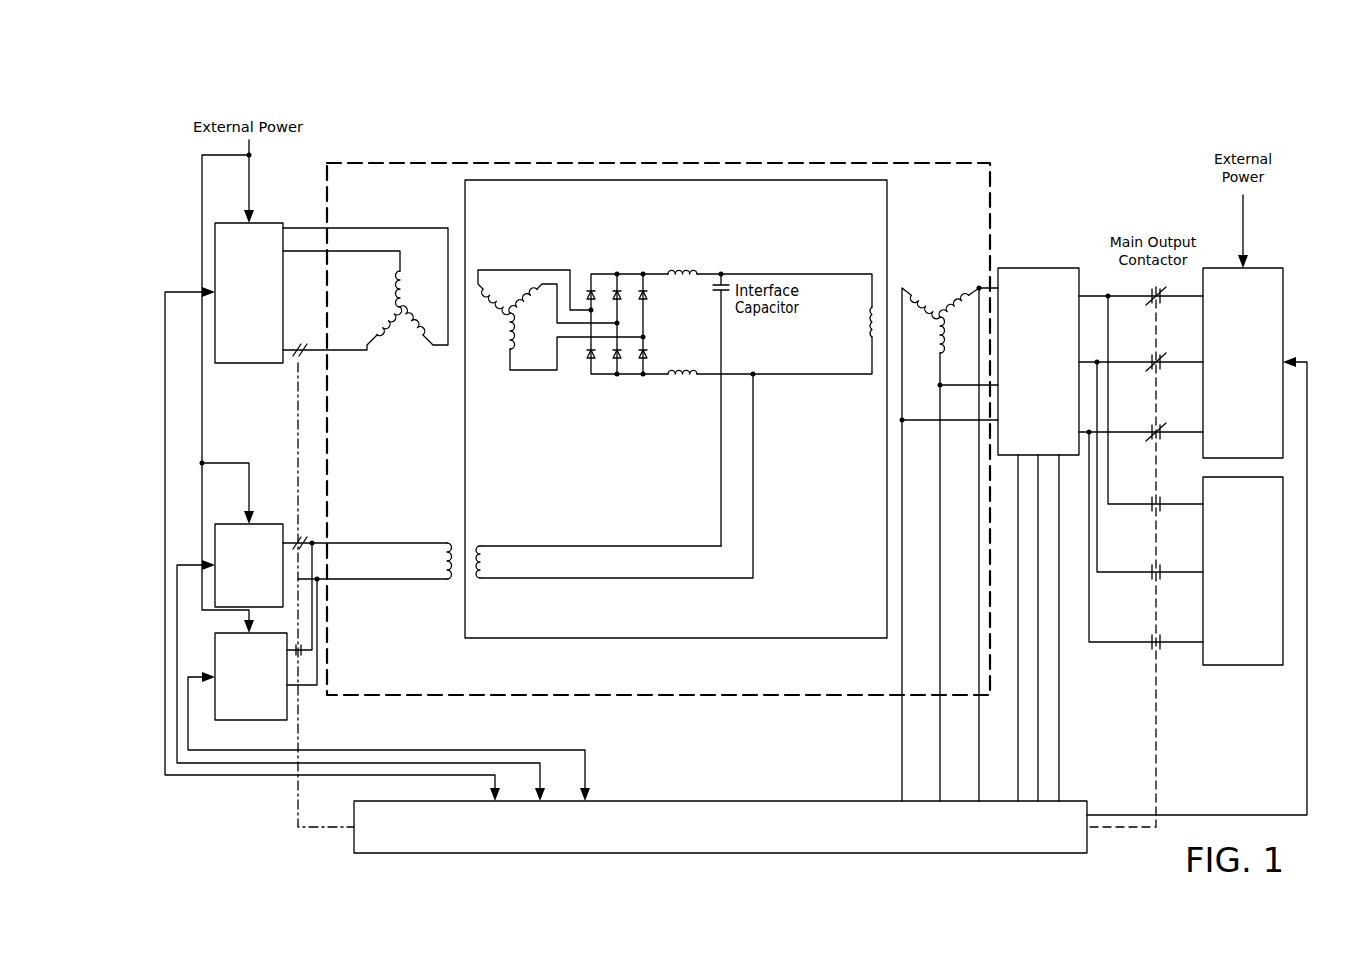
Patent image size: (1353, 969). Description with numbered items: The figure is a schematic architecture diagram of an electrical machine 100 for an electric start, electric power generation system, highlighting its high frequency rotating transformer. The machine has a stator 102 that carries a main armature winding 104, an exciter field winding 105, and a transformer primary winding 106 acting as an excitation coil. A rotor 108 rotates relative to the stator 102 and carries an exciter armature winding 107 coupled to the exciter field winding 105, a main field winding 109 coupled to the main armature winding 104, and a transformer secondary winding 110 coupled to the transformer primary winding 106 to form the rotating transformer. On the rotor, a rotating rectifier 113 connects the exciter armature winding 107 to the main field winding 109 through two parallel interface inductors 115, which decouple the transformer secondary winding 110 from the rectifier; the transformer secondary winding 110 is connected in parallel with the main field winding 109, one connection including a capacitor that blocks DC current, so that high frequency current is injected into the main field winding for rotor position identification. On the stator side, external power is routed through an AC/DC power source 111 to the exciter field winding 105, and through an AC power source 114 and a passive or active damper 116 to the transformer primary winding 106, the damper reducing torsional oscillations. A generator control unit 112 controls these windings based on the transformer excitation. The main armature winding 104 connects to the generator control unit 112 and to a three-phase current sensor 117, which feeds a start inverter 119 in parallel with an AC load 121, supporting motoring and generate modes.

The electrical machine 100 is at (1136, 132).
The stator 102 is at (950, 163).
The main armature winding 104 is at (975, 278).
The exciter field winding 105 is at (383, 298).
The transformer primary winding 106 is at (439, 568).
The exciter armature winding 107 is at (502, 272).
The rotor 108 is at (862, 179).
The main field winding 109 is at (866, 302).
The transformer secondary winding 110 is at (485, 534).
The AC/DC power source 111 is at (268, 223).
The generator control unit 112 is at (815, 801).
The rotating rectifier 113 is at (621, 256).
The AC power source 114 is at (263, 524).
The interface inductors 115 is at (688, 256).
The passive or active damper 116 is at (287, 707).
The three-phase current sensor 117 is at (1060, 268).
The start inverter 119 is at (1218, 268).
The AC load 121 is at (1223, 665).